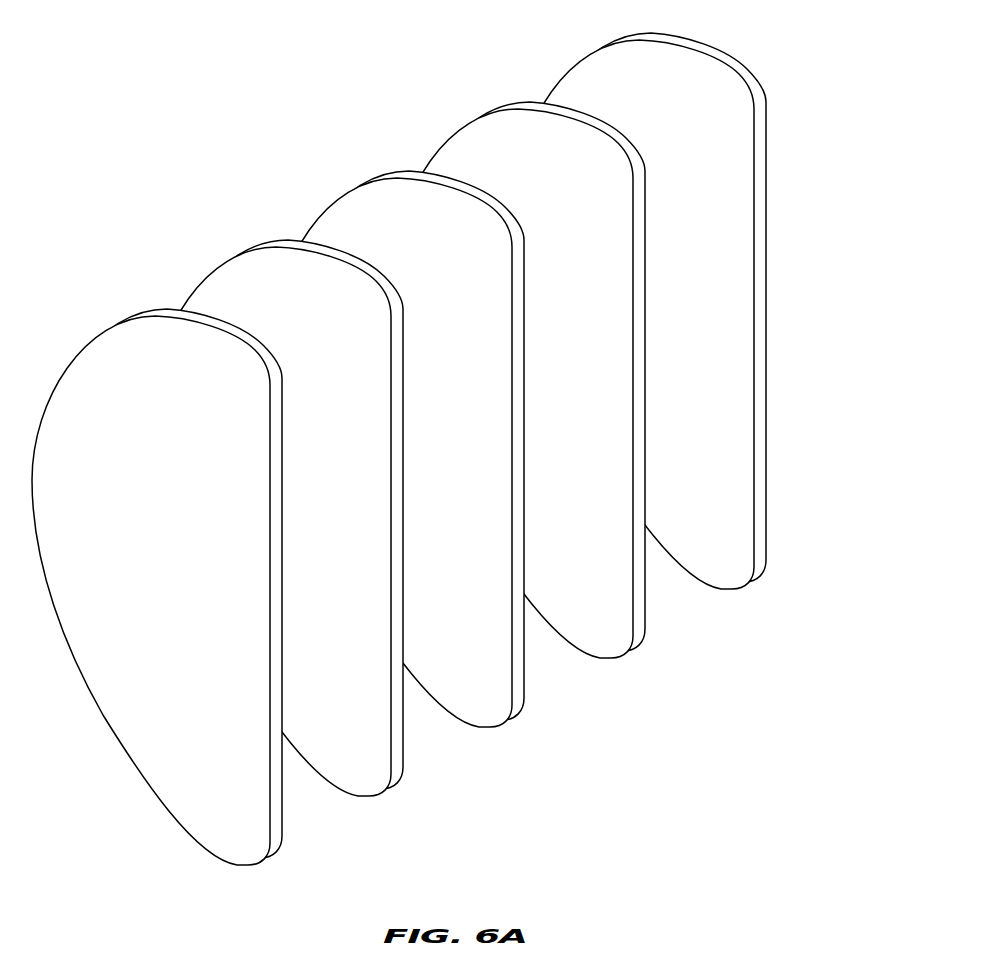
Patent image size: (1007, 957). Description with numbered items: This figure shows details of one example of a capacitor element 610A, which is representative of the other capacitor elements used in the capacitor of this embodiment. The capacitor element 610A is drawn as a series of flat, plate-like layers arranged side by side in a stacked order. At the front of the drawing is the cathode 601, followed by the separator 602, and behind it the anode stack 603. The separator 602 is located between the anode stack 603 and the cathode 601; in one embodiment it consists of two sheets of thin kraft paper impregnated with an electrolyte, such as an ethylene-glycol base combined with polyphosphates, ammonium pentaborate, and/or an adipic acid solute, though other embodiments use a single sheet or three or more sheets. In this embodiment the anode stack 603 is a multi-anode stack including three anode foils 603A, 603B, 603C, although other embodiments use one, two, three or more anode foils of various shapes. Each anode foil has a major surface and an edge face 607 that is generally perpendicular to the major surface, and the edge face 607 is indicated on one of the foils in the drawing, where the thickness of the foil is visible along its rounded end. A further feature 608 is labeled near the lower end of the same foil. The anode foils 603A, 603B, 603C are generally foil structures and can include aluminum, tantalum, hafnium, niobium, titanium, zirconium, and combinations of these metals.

The capacitor element 610A is at (240, 70).
The cathode 601 is at (176, 816).
The separator 602 is at (352, 765).
The anode stack 603 is at (579, 373).
The anode foil 603A is at (348, 192).
The anode foil 603B is at (541, 404).
The anode foil 603C is at (591, 53).
The edge face 607 is at (526, 376).
The front face of plate 608 is at (470, 124).